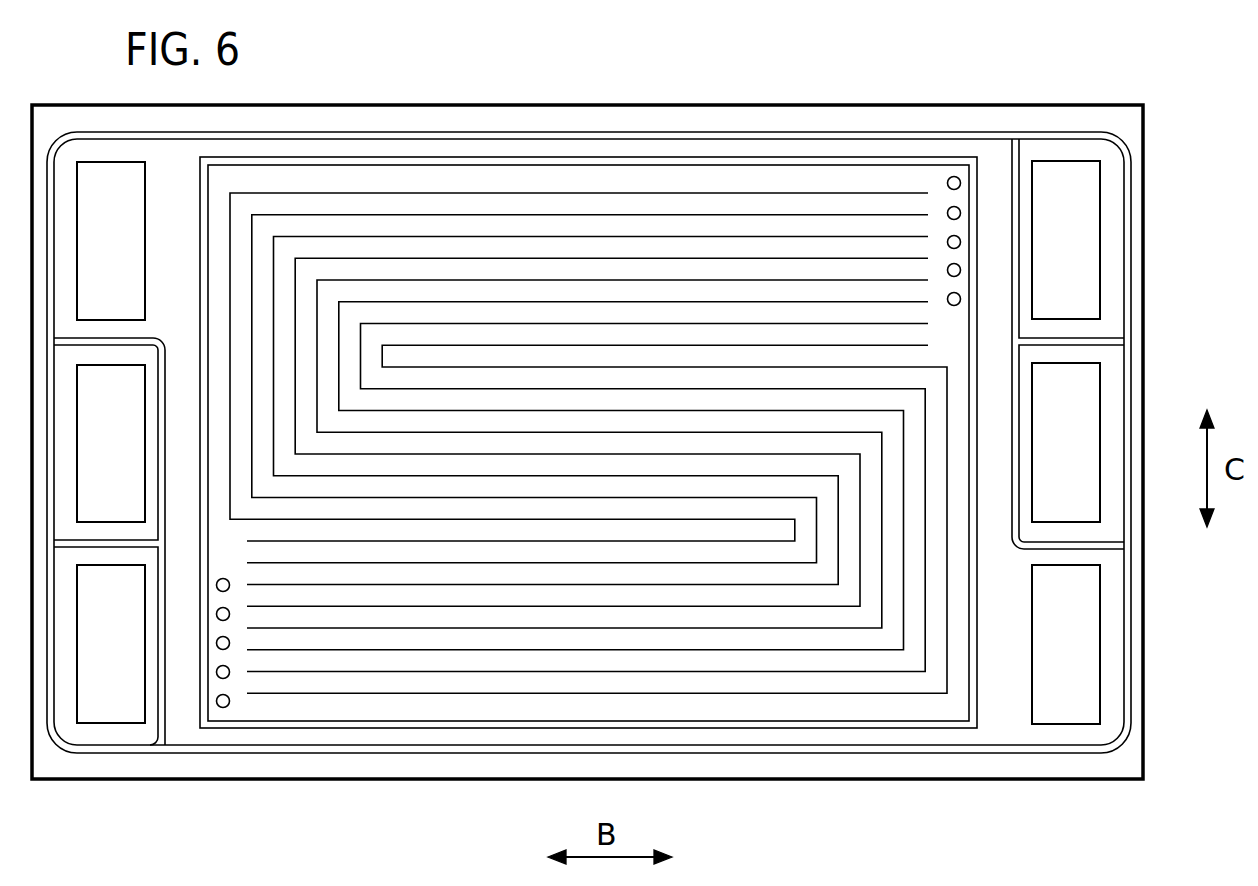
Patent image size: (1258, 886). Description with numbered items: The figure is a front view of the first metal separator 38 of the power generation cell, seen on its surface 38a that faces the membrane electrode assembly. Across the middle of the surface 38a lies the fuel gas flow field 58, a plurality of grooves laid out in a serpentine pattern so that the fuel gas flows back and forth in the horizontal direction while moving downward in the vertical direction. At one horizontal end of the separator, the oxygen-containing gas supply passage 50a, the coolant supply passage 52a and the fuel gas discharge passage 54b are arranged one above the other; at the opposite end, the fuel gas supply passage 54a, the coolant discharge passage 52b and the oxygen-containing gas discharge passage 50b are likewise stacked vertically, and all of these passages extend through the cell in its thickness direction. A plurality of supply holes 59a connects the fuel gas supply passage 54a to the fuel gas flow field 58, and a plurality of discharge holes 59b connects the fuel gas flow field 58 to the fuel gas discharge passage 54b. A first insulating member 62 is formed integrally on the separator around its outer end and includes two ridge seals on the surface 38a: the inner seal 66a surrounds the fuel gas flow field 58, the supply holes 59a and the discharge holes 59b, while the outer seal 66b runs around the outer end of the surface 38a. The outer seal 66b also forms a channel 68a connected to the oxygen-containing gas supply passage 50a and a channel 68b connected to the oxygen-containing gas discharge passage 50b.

The first metal separator 38 is at (553, 74).
The surface 38a is at (983, 763).
The fuel gas flow field 58 is at (398, 225).
The first insulating member 62 is at (843, 103).
The inner seal 66a is at (693, 157).
The outer seal 66b is at (772, 138).
The channel 68a is at (124, 241).
The channel 68b is at (1051, 644).
The oxygen-containing gas supply passage 50a is at (111, 241).
The oxygen-containing gas discharge passage 50b is at (1066, 644).
The coolant supply passage 52a is at (111, 443).
The coolant discharge passage 52b is at (1066, 442).
The fuel gas supply passage 54a is at (1066, 240).
The fuel gas discharge passage 54b is at (111, 644).
The supply holes 59a is at (961, 270).
The discharge holes 59b is at (216, 585).